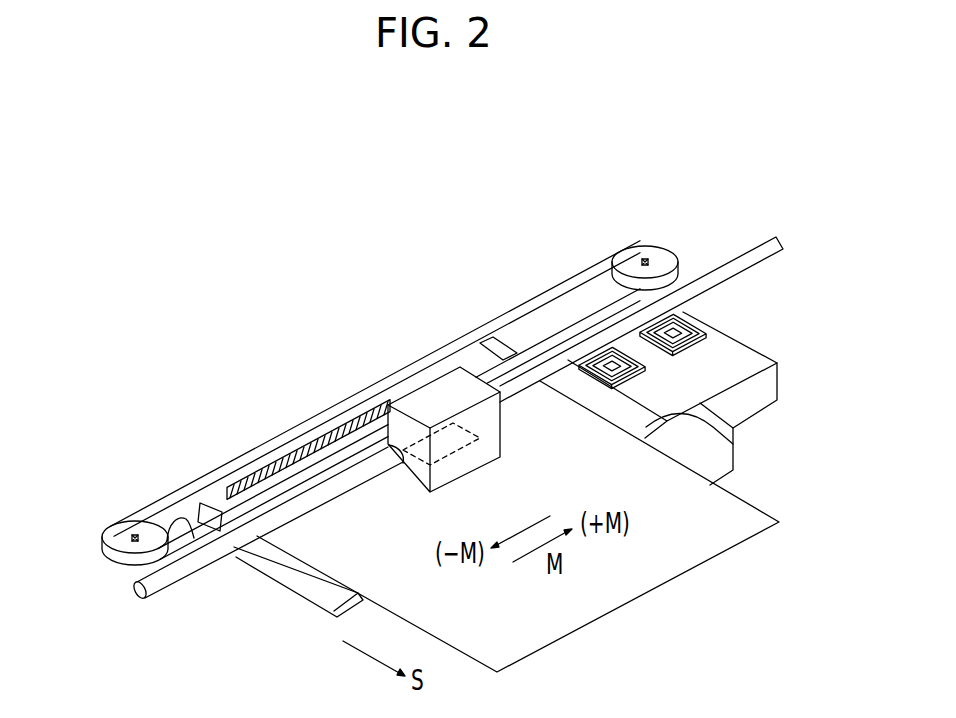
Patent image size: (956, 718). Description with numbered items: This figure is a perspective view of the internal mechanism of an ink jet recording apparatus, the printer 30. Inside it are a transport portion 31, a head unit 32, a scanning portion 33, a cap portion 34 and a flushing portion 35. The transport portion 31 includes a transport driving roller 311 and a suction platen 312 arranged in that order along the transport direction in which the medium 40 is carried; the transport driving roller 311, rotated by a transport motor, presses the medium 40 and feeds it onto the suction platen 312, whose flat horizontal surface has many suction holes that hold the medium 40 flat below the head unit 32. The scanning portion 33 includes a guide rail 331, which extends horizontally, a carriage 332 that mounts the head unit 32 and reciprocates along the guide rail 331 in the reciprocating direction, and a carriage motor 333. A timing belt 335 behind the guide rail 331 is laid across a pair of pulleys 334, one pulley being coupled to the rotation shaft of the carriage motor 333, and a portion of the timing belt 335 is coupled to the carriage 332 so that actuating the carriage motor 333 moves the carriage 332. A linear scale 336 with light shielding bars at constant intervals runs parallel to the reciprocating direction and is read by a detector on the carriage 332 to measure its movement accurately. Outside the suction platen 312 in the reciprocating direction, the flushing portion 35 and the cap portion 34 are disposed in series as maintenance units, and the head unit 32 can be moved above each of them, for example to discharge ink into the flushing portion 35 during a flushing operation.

The printer 30 is at (765, 211).
The transport portion 31 is at (214, 600).
The transport driving roller 311 is at (188, 505).
The suction platen 312 is at (736, 441).
The head unit 32 is at (503, 447).
The scanning portion 33 is at (446, 291).
The guide rail 331 is at (140, 590).
The carriage 332 is at (432, 400).
The carriage motor 333 is at (607, 296).
The pulleys 334 is at (118, 534).
The timing belt 335 is at (247, 466).
The linear scale 336 is at (305, 440).
The cap portion 34 is at (700, 312).
The flushing portion 35 is at (641, 354).
The medium 40 is at (594, 605).